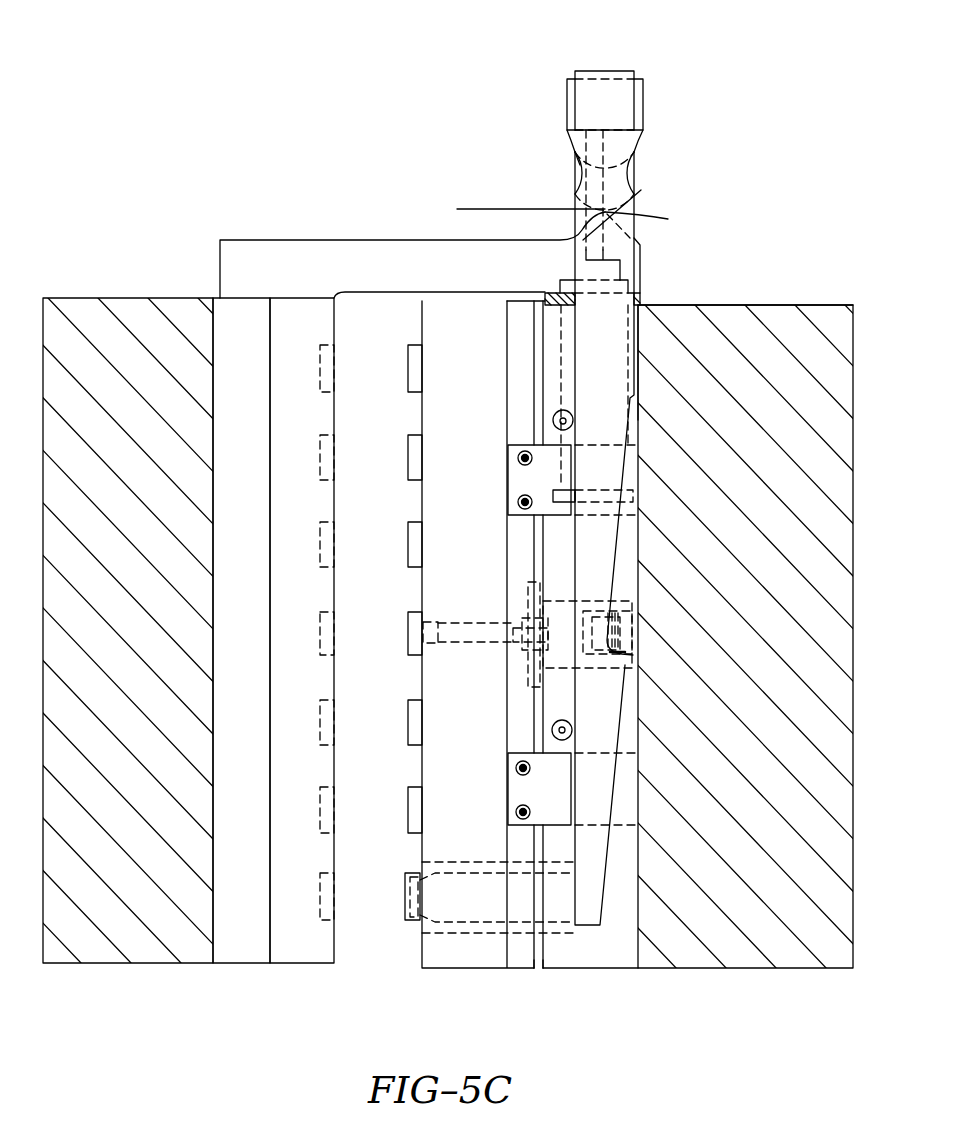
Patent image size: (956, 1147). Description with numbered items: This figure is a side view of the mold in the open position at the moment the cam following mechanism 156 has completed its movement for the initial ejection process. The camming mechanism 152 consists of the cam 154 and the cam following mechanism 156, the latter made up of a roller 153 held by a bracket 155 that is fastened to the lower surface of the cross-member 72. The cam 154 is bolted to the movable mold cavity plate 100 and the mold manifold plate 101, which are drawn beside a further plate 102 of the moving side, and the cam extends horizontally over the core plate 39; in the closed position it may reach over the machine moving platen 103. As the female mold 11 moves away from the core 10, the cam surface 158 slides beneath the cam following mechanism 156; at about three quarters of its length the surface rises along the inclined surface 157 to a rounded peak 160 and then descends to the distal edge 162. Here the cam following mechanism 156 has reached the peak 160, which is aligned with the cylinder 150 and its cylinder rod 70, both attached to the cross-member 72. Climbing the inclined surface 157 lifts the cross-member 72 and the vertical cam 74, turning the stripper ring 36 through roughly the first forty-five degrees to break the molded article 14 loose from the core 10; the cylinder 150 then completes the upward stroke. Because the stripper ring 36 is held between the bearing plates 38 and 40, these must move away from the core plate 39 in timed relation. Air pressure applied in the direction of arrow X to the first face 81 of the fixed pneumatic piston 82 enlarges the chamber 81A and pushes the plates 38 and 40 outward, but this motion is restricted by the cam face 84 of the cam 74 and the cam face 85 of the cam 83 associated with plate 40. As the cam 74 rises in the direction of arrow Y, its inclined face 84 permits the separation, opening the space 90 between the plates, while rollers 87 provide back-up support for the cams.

The core 10 is at (412, 890).
The female mold 11 is at (336, 543).
The molded article 14 is at (408, 457).
The stripper ring 36 is at (468, 860).
The bearing plate 38 is at (473, 366).
The core plate 39 is at (620, 868).
The bearing plate 40 is at (530, 402).
The cylinder rod 70 is at (568, 253).
The cross-member 72 is at (567, 85).
The vertical cam 74 is at (598, 915).
The first face 81 is at (636, 666).
The chamber 81A is at (641, 611).
The fixed pneumatic piston 82 is at (572, 650).
The cam 83 is at (622, 818).
The cam face 84 is at (617, 535).
The cam face 85 is at (615, 472).
The rollers 87 is at (573, 418).
The space 90 is at (537, 964).
The movable mold cavity plate 100 is at (297, 958).
The mold manifold plate 101 is at (233, 953).
The base block 102 is at (152, 950).
The machine moving platen 103 is at (780, 968).
The cylinder 150 is at (640, 338).
The camming mechanism 152 is at (682, 89).
The roller 153 is at (637, 170).
The cam 154 is at (640, 262).
The bracket 155 is at (573, 143).
The cam following mechanism 156 is at (567, 166).
The inclined surface 157 is at (659, 220).
The cam surface 158 is at (262, 238).
The peak 160 is at (635, 207).
The distal edge 162 is at (643, 285).
The arrow X is at (623, 635).
The arrow Y is at (480, 185).